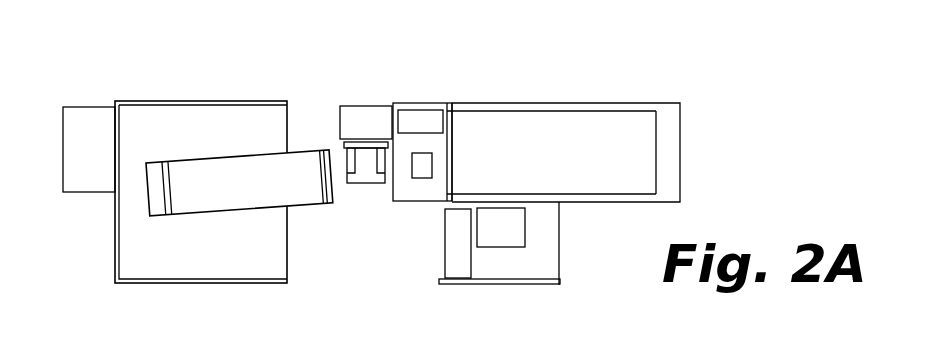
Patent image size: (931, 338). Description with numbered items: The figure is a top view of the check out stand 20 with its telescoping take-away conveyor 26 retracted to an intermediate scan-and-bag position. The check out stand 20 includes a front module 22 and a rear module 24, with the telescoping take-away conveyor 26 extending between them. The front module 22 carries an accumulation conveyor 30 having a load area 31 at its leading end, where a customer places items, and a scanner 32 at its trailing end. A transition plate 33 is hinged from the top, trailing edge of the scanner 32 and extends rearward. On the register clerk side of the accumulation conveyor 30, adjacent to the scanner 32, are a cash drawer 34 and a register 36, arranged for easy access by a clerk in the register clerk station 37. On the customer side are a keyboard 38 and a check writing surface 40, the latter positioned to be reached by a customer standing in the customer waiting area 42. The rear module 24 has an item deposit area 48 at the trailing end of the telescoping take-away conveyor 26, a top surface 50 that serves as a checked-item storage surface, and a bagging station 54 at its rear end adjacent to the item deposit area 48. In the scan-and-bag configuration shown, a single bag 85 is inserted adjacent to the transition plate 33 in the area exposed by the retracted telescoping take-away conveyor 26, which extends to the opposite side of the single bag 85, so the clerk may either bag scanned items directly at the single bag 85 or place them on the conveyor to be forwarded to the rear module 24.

The check out stand 20 is at (328, 66).
The front module 22 is at (593, 74).
The rear module 24 is at (180, 74).
The telescoping take-away conveyor 26 is at (310, 168).
The accumulation conveyor 30 is at (575, 170).
The load area 31 is at (725, 166).
The scanner 32 is at (425, 167).
The transition plate 33 is at (390, 195).
The cash drawer 34 is at (462, 250).
The register 36 is at (512, 225).
The register clerk station 37 is at (430, 251).
The keyboard 38 is at (433, 121).
The check writing surface 40 is at (363, 125).
The customer waiting area 42 is at (454, 85).
The item deposit area 48 is at (158, 197).
The top surface 50 is at (194, 257).
The bagging station 54 is at (102, 135).
The single bag 85 is at (365, 163).